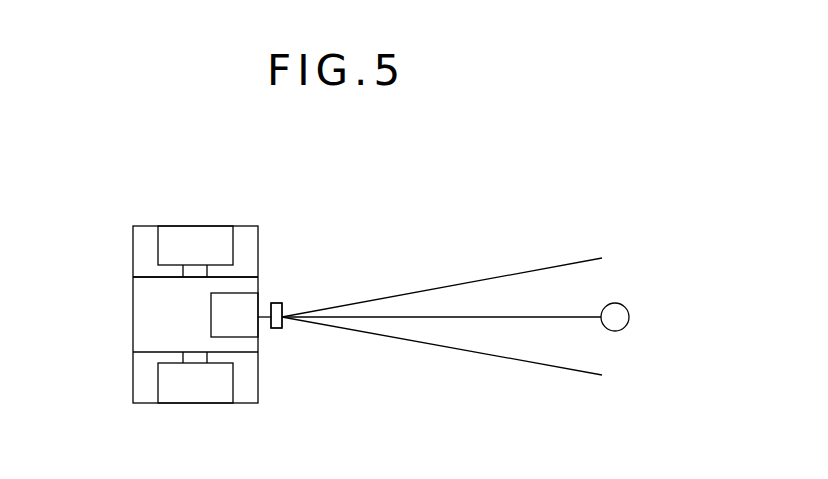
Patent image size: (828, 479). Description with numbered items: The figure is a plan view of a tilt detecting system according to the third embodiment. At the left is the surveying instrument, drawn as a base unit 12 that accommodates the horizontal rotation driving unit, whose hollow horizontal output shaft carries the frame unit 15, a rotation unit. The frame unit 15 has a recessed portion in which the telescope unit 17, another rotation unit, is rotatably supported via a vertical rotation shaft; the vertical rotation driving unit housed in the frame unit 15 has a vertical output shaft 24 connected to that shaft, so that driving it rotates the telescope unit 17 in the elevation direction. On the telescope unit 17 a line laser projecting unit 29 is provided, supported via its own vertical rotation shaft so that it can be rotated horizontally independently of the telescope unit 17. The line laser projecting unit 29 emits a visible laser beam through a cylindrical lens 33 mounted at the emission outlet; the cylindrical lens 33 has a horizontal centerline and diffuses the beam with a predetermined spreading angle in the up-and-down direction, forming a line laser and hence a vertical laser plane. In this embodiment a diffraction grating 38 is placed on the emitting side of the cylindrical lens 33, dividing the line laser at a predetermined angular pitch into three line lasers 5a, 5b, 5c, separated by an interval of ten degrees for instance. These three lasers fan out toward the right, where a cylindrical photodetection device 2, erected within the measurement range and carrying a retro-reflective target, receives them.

The photodetection device 2 is at (628, 308).
The base unit 12 is at (247, 226).
The frame unit 15 is at (190, 226).
The telescope unit 17 is at (152, 275).
The vertical output shaft 24 is at (182, 357).
The line laser projecting unit 29 is at (210, 308).
The cylindrical lens 33 is at (268, 303).
The diffraction grating 38 is at (278, 330).
The line laser 5a is at (538, 268).
The line laser 5b is at (558, 316).
The line laser 5c is at (538, 363).